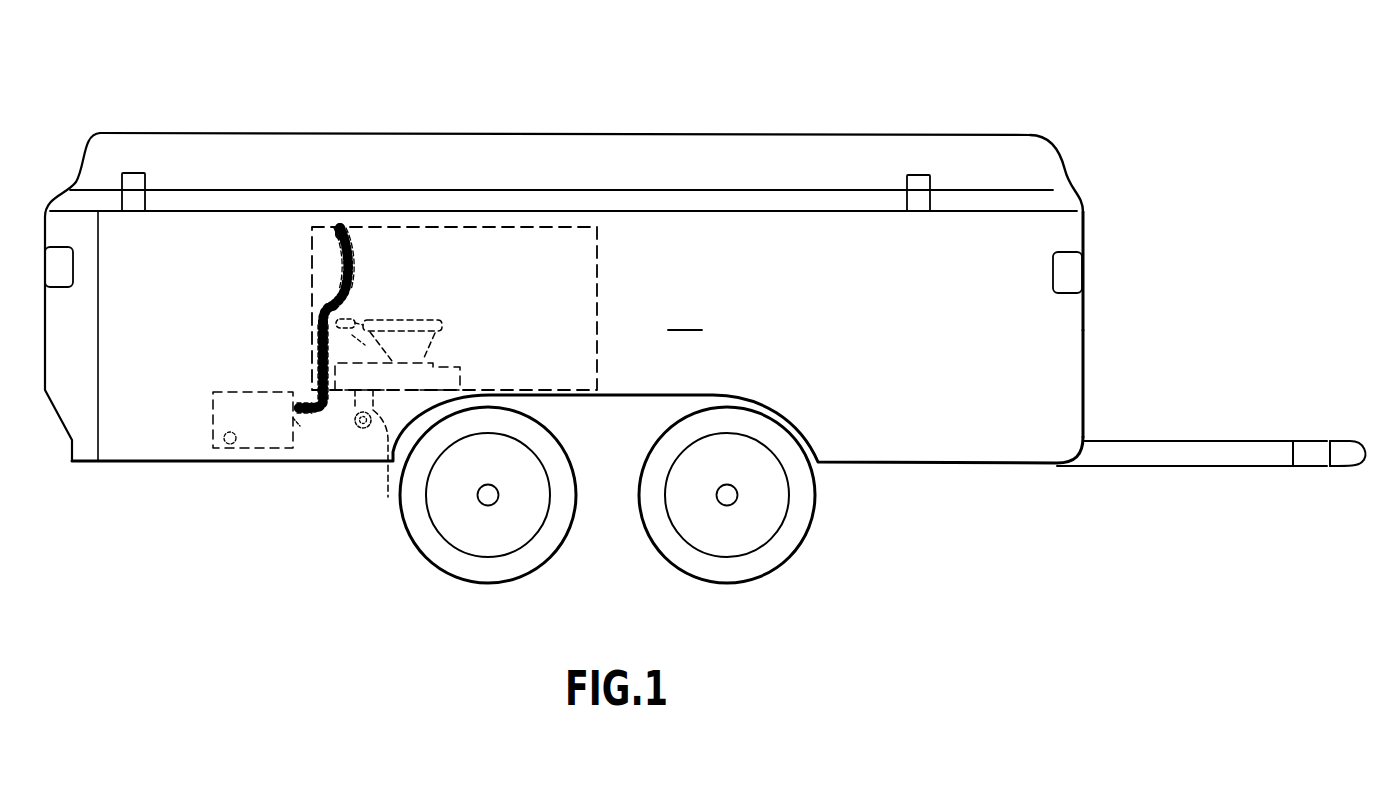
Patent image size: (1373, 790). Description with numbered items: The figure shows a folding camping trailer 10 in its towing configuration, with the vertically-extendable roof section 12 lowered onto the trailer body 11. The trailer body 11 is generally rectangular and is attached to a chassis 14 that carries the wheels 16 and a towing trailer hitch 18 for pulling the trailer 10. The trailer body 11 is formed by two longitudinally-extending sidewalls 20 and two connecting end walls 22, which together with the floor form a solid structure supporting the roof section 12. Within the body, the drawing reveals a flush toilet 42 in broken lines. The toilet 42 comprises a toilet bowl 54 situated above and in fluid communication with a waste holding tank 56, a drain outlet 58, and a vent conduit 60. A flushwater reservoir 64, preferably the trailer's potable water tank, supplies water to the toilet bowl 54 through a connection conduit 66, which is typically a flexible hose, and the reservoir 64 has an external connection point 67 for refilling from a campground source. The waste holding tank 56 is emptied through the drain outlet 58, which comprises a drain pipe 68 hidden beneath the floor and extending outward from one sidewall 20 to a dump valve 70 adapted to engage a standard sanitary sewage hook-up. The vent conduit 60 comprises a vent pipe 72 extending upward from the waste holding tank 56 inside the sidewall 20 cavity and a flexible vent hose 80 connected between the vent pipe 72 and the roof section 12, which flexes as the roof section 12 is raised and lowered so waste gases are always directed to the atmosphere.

The folding camping trailer 10 is at (670, 97).
The trailer body 11 is at (1087, 235).
The vertically-extendable roof section 12 is at (988, 148).
The chassis 14 is at (722, 498).
The wheels 16 is at (523, 567).
The towing trailer hitch 18 is at (1348, 458).
The sidewalls 20 is at (685, 317).
The end walls 22 is at (1087, 332).
The flush toilet 42 is at (430, 302).
The toilet bowl 54 is at (450, 335).
The waste holding tank 56 is at (450, 380).
The drain outlet 58 is at (355, 437).
The vent conduit 60 is at (360, 256).
The flushwater reservoir 64 is at (213, 413).
The connection conduit 66 is at (312, 323).
The external connection point 67 is at (228, 445).
The drain pipe 68 is at (381, 469).
The dump valve 70 is at (363, 430).
The vent pipe 72 is at (312, 353).
The vent hose 80 is at (337, 247).